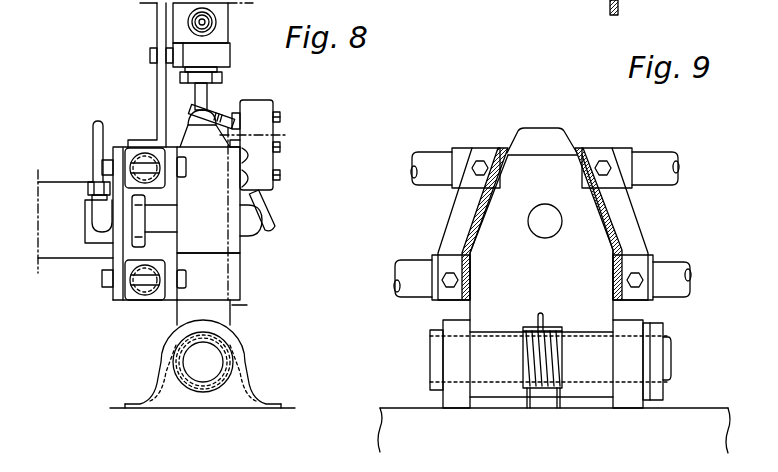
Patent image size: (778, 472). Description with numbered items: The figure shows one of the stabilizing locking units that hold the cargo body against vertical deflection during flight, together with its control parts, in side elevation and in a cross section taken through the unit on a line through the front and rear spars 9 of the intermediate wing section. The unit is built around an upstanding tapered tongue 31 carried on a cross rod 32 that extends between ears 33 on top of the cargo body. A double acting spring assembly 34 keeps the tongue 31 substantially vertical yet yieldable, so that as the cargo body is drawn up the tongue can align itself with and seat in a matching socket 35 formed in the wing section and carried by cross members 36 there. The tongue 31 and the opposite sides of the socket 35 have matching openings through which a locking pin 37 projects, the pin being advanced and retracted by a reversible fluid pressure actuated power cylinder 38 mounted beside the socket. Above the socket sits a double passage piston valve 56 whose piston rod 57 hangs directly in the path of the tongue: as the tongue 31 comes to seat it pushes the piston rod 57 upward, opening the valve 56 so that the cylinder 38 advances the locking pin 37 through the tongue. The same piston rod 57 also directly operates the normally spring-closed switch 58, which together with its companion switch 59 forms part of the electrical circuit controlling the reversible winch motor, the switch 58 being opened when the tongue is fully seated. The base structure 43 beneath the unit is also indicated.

In FIG. 8, the spar 9 is at (259, 221).
In FIG. 8, the tongue 31 is at (204, 142).
In FIG. 9, the tongue 31 is at (553, 167).
In FIG. 8, the cross rod 32 is at (207, 357).
In FIG. 9, the cross rod 32 is at (675, 365).
In FIG. 8, the ears 33 is at (238, 353).
In FIG. 9, the ears 33 is at (635, 358).
In FIG. 8, the double acting spring assembly 34 is at (263, 407).
In FIG. 9, the double acting spring assembly 34 is at (547, 362).
In FIG. 8, the socket 35 is at (226, 273).
In FIG. 9, the socket 35 is at (613, 230).
In FIG. 8, the cross members 36 is at (127, 152).
In FIG. 9, the cross members 36 is at (422, 163).
In FIG. 8, the locking pin 37 is at (260, 238).
In FIG. 8, the power cylinder 38 is at (67, 248).
In FIG. 8, the base frame 43 is at (173, 440).
In FIG. 8, the double passage piston valve 56 is at (182, 27).
In FIG. 8, the piston rod 57 is at (200, 97).
In FIG. 8, the switch 58 is at (213, 110).
In FIG. 8, the switch 59 is at (278, 212).